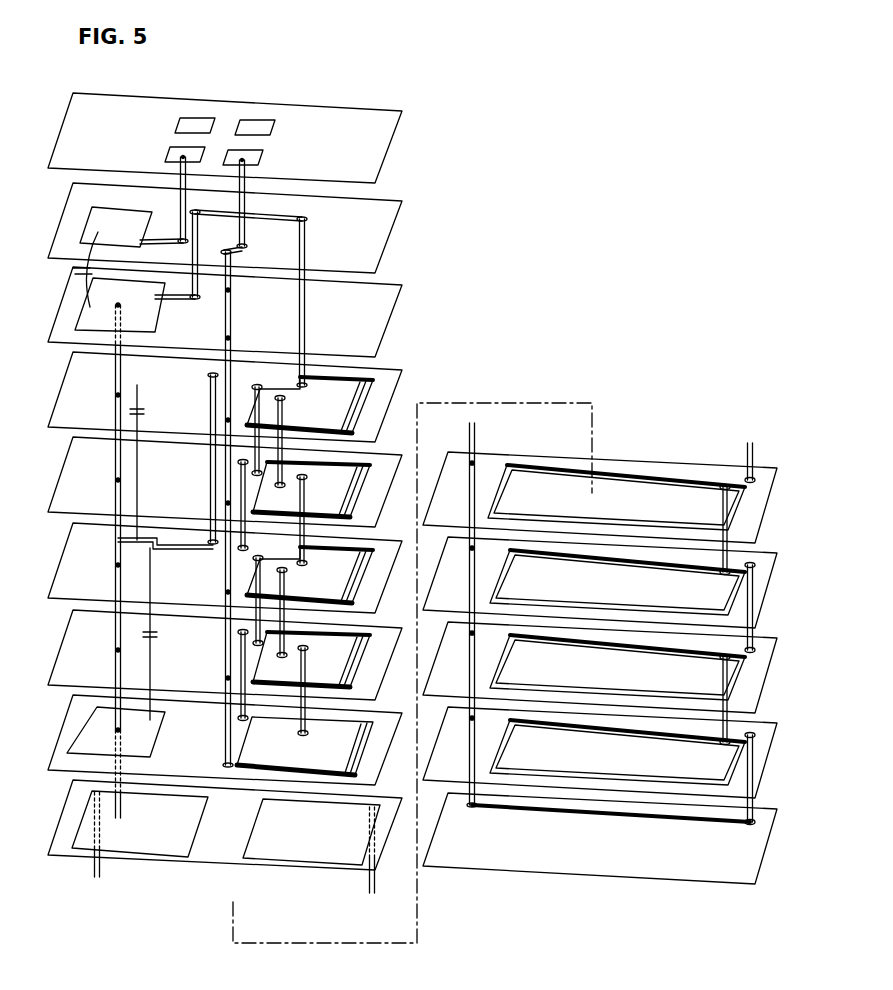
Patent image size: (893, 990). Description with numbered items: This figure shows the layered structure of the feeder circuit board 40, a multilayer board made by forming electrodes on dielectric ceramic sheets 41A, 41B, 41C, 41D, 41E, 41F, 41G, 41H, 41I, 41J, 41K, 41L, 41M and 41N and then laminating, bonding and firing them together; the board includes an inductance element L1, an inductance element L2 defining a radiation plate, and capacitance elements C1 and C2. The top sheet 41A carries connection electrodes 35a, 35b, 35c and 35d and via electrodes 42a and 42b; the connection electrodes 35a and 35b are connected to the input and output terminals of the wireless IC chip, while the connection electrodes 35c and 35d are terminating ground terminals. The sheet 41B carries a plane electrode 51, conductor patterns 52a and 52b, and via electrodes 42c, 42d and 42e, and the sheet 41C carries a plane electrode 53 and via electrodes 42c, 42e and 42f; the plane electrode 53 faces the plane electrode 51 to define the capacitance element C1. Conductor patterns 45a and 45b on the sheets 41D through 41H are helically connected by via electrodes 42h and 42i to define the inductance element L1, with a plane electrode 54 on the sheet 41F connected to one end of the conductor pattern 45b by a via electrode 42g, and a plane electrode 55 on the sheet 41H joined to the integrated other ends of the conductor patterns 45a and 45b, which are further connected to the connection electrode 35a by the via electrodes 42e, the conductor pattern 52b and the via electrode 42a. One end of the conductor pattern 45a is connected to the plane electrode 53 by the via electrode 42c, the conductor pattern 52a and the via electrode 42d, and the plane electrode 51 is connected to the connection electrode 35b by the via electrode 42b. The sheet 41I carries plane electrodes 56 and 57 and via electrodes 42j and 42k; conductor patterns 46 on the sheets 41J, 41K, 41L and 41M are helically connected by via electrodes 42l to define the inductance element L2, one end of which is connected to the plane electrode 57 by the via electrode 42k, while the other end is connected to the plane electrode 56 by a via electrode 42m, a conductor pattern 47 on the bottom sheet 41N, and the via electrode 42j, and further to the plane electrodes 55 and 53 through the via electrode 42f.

The feeder circuit board 40 is at (453, 84).
The connection electrode 35a is at (264, 158).
The connection electrode 35b is at (169, 151).
The connection electrode 35c is at (257, 119).
The connection electrode 35d is at (195, 117).
The sheet 41A is at (225, 138).
The sheet 41B is at (225, 228).
The sheet 41C is at (225, 312).
The sheet 41D is at (225, 397).
The sheet 41E is at (225, 482).
The sheet 41F is at (225, 568).
The sheet 41G is at (225, 655).
The sheet 41H is at (225, 740).
The sheet 41I is at (225, 825).
The sheet 41J is at (600, 497).
The sheet 41K is at (600, 582).
The sheet 41L is at (600, 667).
The sheet 41M is at (600, 752).
The sheet 41N is at (600, 838).
The via electrode 42a is at (245, 158).
The via electrode 42b is at (181, 155).
The via electrode 42c is at (306, 219).
The via electrode 42d is at (197, 212).
The via electrode 42e is at (230, 290).
The via electrode 42f is at (120, 305).
The via electrode 42g is at (208, 375).
The via electrode 42h is at (252, 388).
The via electrode 42i is at (283, 400).
The via electrode 42j is at (99, 796).
The via electrode 42k is at (370, 809).
The via electrode 42l is at (720, 487).
The via electrode 42m is at (745, 745).
The conductor pattern 45a is at (376, 383).
The conductor pattern 45b is at (372, 402).
The conductor pattern 46 is at (626, 474).
The conductor pattern 47 is at (690, 824).
The plane electrode 51 is at (125, 213).
The conductor pattern 52a is at (268, 224).
The conductor pattern 52b is at (225, 252).
The plane electrode 53 is at (160, 334).
The plane electrode 54 is at (148, 550).
The plane electrode 55 is at (96, 724).
The plane electrode 56 is at (152, 848).
The plane electrode 57 is at (310, 858).
The capacitance element C1 is at (69, 269).
The capacitance element C2 is at (141, 552).
The inductance element L1 is at (382, 368).
The inductance element L2 is at (697, 464).